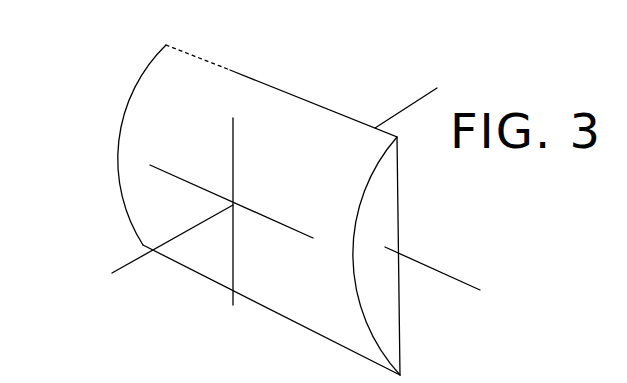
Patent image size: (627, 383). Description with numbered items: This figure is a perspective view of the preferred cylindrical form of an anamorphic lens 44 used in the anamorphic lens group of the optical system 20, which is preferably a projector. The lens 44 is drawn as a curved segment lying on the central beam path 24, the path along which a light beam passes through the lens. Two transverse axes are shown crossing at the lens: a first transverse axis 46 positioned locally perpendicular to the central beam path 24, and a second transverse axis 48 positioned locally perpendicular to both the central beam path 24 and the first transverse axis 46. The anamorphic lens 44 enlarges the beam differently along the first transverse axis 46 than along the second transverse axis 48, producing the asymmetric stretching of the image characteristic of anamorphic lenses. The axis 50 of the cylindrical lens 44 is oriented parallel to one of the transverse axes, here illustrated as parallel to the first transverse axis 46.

The optical system 20 is at (174, 381).
The central beam path 24 is at (130, 264).
The anamorphic lens 44 is at (137, 82).
The first transverse axis 46 is at (271, 221).
The second transverse axis 48 is at (236, 147).
The axis of the cylindrical anamorphic lens 50 is at (451, 276).